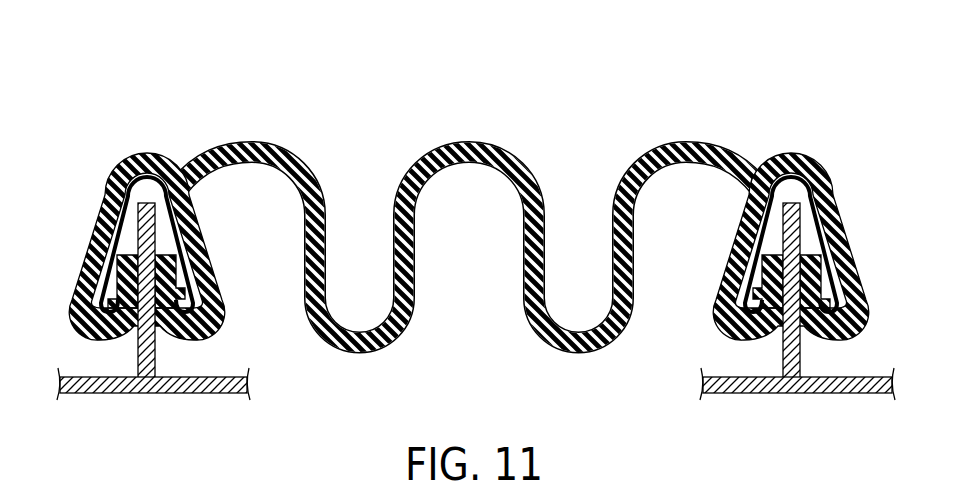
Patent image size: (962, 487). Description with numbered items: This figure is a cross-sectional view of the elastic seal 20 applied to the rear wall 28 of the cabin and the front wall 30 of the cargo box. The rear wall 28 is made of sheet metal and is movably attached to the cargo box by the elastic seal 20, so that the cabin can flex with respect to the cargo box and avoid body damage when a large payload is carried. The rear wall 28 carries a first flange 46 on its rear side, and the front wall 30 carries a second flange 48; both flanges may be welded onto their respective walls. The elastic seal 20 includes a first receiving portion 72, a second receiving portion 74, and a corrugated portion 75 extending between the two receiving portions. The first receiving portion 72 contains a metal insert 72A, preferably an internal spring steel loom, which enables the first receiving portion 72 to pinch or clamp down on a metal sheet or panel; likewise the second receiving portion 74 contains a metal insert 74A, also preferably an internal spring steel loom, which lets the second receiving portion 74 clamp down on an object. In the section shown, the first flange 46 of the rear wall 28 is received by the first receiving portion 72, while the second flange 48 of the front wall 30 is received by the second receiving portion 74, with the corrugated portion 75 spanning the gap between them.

The elastic seal 20 is at (469, 179).
The rear wall 28 is at (212, 387).
The front wall 30 is at (850, 389).
The first flange 46 is at (148, 233).
The second flange 48 is at (790, 231).
The first receiving portion 72 is at (131, 153).
The metal insert 72A is at (117, 222).
The second receiving portion 74 is at (806, 153).
The metal insert 74A is at (822, 226).
The corrugated portion 75 is at (490, 126).